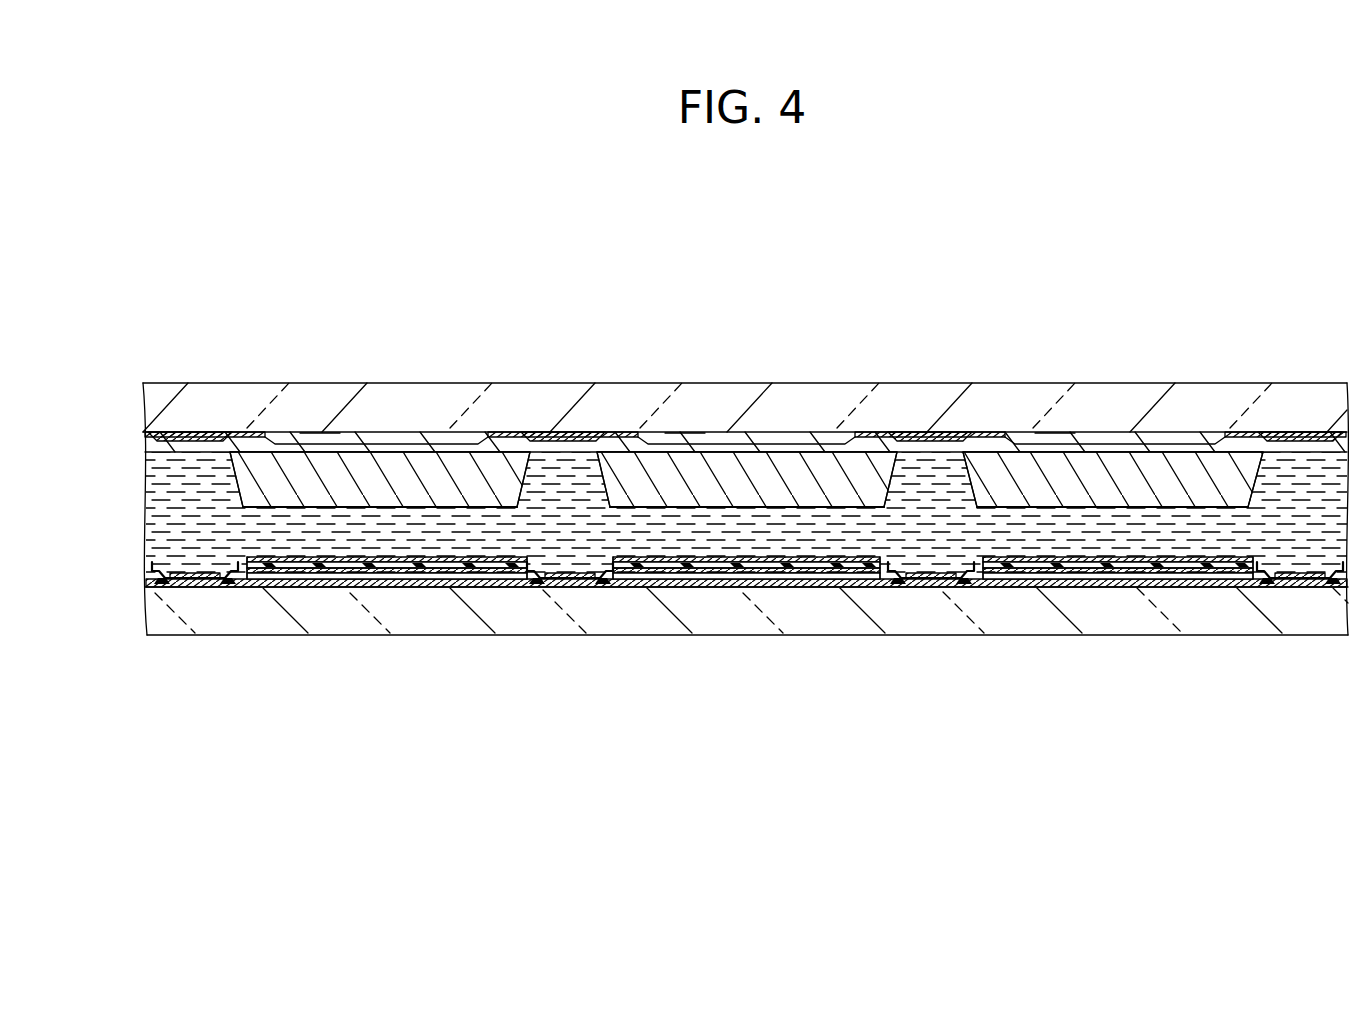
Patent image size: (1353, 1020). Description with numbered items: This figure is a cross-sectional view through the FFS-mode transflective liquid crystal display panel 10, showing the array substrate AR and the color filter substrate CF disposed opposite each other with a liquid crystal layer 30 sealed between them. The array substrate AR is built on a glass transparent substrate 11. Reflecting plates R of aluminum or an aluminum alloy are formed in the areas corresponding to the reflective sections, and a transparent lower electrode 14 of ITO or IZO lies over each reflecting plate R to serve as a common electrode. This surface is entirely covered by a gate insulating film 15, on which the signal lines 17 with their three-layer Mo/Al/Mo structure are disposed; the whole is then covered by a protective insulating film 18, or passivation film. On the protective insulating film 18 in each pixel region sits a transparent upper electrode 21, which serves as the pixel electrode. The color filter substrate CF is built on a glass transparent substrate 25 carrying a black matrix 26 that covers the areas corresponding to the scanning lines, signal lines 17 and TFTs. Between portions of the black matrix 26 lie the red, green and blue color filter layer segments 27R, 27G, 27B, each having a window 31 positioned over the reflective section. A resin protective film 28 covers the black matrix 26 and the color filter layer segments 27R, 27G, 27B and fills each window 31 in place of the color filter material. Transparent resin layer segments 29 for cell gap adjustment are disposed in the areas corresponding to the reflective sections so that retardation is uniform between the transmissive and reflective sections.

The FFS-mode transflective liquid crystal display panel 10 is at (420, 233).
The transparent substrate 11 is at (150, 611).
The lower electrode 14 is at (316, 590).
The gate insulating film 15 is at (364, 590).
The signal line 17 is at (195, 588).
The protective insulating film 18 is at (418, 590).
The upper electrode 21 is at (486, 590).
The transparent substrate 25 is at (150, 403).
The black matrix 26 is at (207, 432).
The red color filter layer segment 27R is at (478, 437).
The green color filter layer segment 27G is at (852, 437).
The blue color filter layer segment 27B is at (1209, 437).
The protective film 28 is at (150, 448).
The transparent resin layer segment 29 is at (290, 482).
The liquid crystal layer 30 is at (150, 509).
The window 31 is at (322, 421).
The color filter substrate CF is at (785, 335).
The array substrate AR is at (668, 688).
The reflecting plate R is at (267, 590).